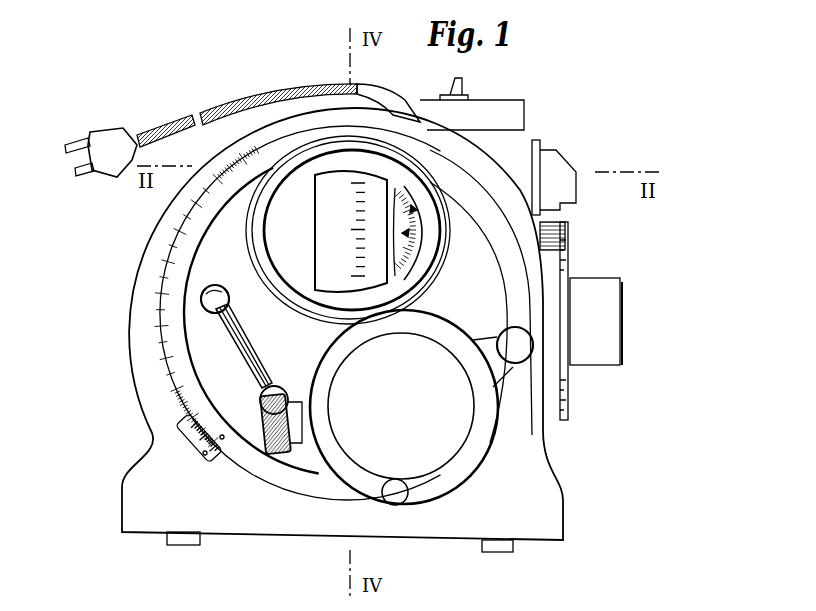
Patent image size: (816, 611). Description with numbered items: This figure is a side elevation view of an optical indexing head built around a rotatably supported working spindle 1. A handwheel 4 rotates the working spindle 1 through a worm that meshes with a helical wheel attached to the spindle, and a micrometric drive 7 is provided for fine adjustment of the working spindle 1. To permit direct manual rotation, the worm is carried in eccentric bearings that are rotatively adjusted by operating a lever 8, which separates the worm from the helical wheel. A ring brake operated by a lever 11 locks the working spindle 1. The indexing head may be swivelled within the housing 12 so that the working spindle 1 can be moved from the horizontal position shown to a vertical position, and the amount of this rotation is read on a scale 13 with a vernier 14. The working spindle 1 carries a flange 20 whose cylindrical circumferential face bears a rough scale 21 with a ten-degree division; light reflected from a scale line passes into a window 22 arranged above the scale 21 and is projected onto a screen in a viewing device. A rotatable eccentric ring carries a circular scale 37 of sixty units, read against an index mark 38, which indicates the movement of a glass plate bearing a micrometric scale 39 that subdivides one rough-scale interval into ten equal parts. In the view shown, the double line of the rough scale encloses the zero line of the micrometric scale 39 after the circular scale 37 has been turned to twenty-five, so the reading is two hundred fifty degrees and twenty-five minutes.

The working spindle 1 is at (608, 304).
The handwheel 4 is at (368, 492).
The micrometric drive 7 is at (265, 436).
The lever 8 is at (517, 353).
The lever 11 is at (238, 332).
The housing 12 is at (148, 367).
The scale 13 is at (168, 326).
The vernier 14 is at (200, 450).
The flange 20 is at (568, 263).
The scale 21 is at (565, 236).
The window 22 is at (560, 207).
The circular scale 37 is at (413, 227).
The index mark 38 is at (402, 233).
The micrometric scale 39 is at (355, 228).